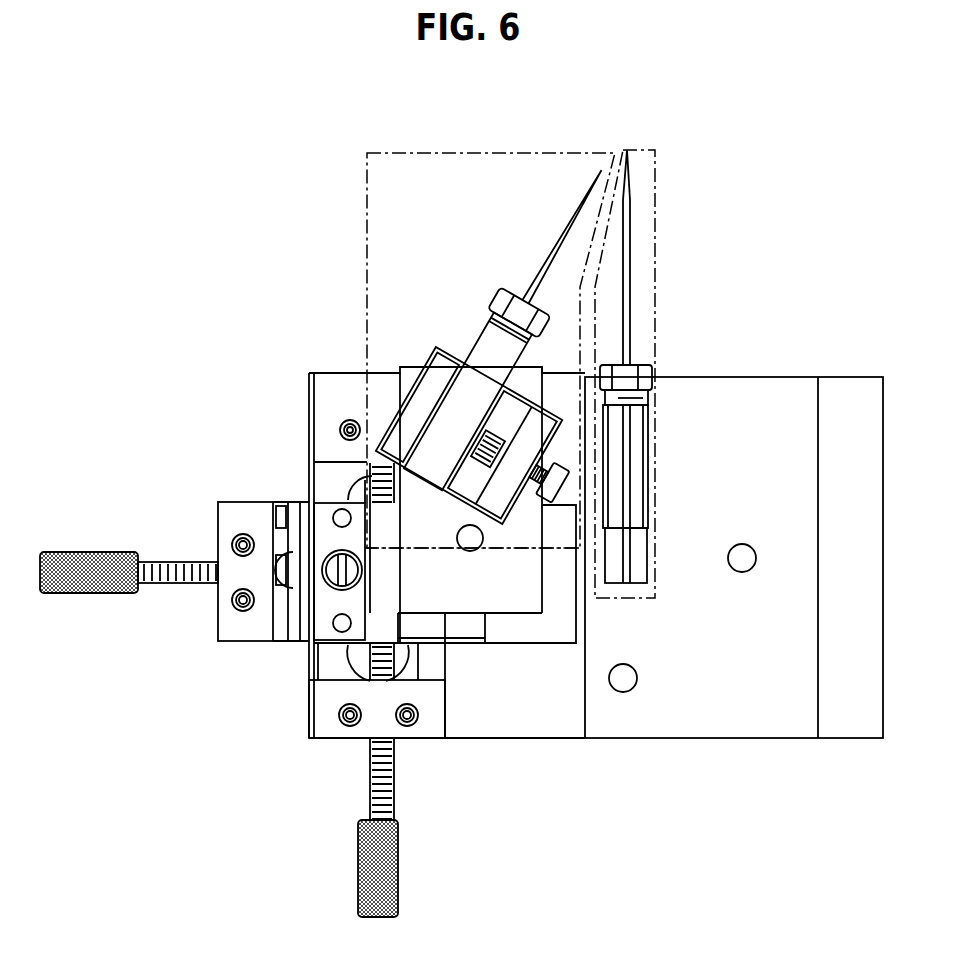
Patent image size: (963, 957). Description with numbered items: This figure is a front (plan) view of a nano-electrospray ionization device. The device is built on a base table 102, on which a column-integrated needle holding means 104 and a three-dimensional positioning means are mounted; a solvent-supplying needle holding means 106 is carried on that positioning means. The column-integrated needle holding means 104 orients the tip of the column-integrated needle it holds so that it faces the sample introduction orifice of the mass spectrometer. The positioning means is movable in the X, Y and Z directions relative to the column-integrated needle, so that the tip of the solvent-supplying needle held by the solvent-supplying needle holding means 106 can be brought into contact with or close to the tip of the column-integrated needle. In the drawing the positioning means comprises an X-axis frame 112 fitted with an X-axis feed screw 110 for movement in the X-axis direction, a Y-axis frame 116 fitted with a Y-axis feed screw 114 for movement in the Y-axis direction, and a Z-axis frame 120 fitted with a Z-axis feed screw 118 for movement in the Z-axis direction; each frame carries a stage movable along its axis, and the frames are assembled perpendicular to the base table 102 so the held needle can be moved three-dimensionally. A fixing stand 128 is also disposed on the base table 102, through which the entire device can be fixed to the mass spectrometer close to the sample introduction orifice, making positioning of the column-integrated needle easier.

The base table 102 is at (530, 733).
The column-integrated needle holding means 104 is at (657, 237).
The solvent-supplying needle holding means 106 is at (368, 237).
The X-axis feed screw 110 is at (88, 553).
The X-axis frame 112 is at (245, 512).
The Y-axis feed screw 114 is at (360, 872).
The Y-axis frame 116 is at (323, 717).
The Z-axis feed screw 118 is at (333, 588).
The Z-axis frame 120 is at (316, 623).
The fixing stand 128 is at (850, 387).